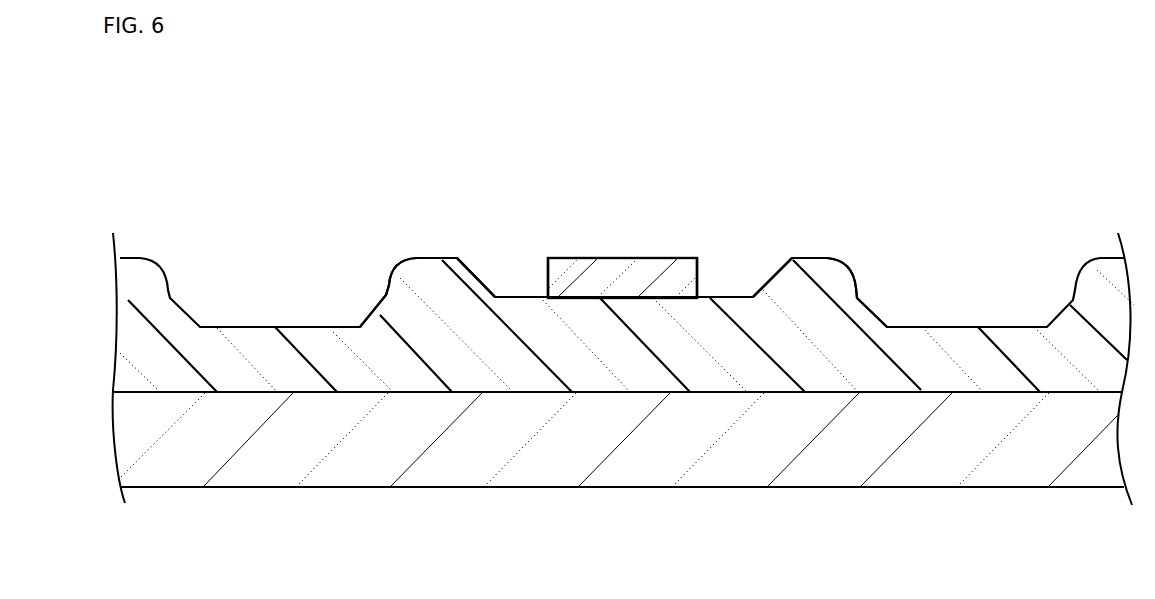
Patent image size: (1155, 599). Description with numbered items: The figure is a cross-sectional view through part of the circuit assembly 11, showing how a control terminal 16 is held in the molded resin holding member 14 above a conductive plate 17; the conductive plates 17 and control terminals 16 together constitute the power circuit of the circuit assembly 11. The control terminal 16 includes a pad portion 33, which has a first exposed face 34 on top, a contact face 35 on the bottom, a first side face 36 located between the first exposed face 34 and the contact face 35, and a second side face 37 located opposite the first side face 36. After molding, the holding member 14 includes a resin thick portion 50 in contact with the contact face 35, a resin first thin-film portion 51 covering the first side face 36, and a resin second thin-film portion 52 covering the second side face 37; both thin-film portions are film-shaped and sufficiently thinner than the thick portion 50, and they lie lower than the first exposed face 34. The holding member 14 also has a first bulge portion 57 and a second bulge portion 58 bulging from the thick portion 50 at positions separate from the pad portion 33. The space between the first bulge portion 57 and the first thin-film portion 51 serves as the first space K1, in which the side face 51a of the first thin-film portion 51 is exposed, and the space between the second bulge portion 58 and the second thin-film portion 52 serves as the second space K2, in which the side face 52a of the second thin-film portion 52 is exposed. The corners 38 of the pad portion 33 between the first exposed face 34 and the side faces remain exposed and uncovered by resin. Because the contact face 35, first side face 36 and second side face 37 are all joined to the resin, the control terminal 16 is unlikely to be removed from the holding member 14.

The circuit assembly 11 is at (1018, 489).
The holding member 14 is at (879, 317).
The control terminal 16 is at (655, 257).
The conductive plate 17 is at (817, 476).
The pad portion 33 is at (623, 272).
The first exposed face 34 is at (593, 258).
The contact face 35 is at (632, 299).
The first side face 36 is at (525, 292).
The second side face 37 is at (710, 290).
The corner 38 is at (548, 266).
The thick portion 50 is at (555, 345).
The first thin-film portion 51 is at (512, 282).
The side face of the first thin-film portion 51a is at (546, 290).
The second thin-film portion 52 is at (736, 285).
The side face of the second thin-film portion 52a is at (702, 266).
The first bulge portion 57 is at (407, 262).
The second bulge portion 58 is at (833, 265).
The first space K1 is at (487, 267).
The second space K2 is at (760, 267).